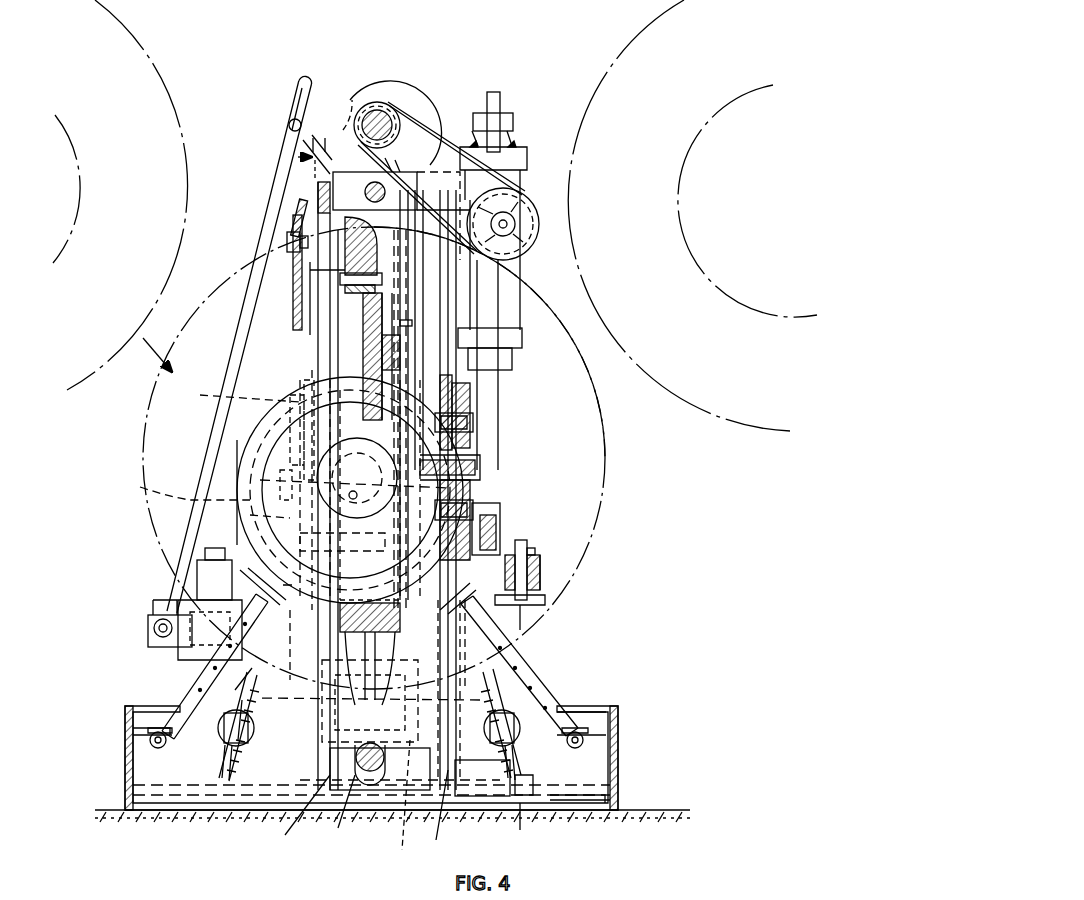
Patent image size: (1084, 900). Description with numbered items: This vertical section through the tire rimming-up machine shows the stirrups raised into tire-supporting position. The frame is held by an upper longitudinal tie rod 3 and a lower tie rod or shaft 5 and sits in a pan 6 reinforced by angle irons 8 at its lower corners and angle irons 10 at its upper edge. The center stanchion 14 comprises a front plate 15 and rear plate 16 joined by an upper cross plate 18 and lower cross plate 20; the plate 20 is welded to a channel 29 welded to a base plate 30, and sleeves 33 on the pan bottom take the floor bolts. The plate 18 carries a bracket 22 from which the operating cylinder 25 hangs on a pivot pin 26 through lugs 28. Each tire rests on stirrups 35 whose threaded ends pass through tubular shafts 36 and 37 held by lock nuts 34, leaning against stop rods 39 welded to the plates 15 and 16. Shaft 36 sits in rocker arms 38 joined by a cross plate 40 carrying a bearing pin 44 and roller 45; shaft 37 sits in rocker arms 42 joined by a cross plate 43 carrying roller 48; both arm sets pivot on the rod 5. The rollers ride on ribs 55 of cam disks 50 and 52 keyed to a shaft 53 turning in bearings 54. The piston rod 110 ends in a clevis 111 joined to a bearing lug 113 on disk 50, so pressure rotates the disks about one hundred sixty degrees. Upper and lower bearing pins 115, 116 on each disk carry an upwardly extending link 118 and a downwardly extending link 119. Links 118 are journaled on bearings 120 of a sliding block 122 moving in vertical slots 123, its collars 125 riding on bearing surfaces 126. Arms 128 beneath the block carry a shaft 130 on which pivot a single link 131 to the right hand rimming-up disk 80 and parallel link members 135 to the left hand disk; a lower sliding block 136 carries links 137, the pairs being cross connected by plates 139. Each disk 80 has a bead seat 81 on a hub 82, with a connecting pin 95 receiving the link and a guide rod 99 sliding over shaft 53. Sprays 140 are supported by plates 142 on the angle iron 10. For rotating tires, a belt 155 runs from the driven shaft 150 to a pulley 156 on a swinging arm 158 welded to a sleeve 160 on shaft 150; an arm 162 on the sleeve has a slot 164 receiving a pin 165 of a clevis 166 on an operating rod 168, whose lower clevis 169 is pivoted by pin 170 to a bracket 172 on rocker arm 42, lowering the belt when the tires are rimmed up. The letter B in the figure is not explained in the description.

The upper longitudinal tie rod 3 is at (365, 193).
The lower longitudinal tie rod 5 is at (337, 810).
The pan 6 is at (620, 753).
The angle irons 8 is at (608, 796).
The angle irons 10 is at (620, 722).
The center stanchion 14 is at (313, 180).
The front plate 15 is at (318, 200).
The rear plate 16 is at (437, 222).
The cross plate 18 is at (352, 174).
The cross plate 20 is at (294, 814).
The bracket 22 is at (500, 98).
The operating cylinder 25 is at (520, 182).
The pivot pin 26 is at (513, 122).
The lugs 28 is at (507, 130).
The third channel 29 is at (476, 800).
The base plate 30 is at (380, 795).
The sleeves 33 is at (525, 805).
The lock nuts 34 is at (240, 738).
The stirrups 35 is at (245, 680).
The front tubular shaft 36 is at (225, 732).
The rear tubular shaft 37 is at (490, 700).
The rocker arms 38 is at (228, 745).
The stop rods 39 is at (420, 300).
The angular cross plate 40 is at (545, 598).
The rocker arms 42 is at (234, 692).
The angular cross plate 43 is at (200, 635).
The bearing pin 44 is at (521, 548).
The cam follower roller 45 is at (540, 562).
The cam follower roller 48 is at (200, 572).
The cam disk 50 is at (470, 440).
The cam disk 52 is at (295, 420).
The shaft 53 is at (448, 470).
The bearings 54 is at (265, 477).
The rib 55 is at (367, 588).
The rimming-up disks 80 is at (245, 500).
The bead seat 81 is at (255, 455).
The hub 82 is at (335, 500).
The connecting pin 95 is at (355, 505).
The guide rod 99 is at (385, 543).
The piston rod 110 is at (452, 430).
The clevis 111 is at (500, 515).
The bearing lug 113 is at (496, 528).
The upper bearing pin 115 is at (473, 428).
The lower bearing pin 116 is at (458, 510).
The upwardly extending link 118 is at (296, 275).
The downwardly extending link 119 is at (290, 620).
The bearings 120 is at (287, 240).
The sliding block 122 is at (345, 220).
The vertical slots 123 is at (345, 300).
The collars 125 is at (302, 221).
The bearing surfaces 126 is at (612, 345).
The parallel arms 128 is at (350, 318).
The shaft 130 is at (340, 279).
The single link 131 is at (345, 375).
The parallel link members 135 is at (340, 380).
The sliding block 136 is at (400, 808).
The links 137 is at (395, 690).
The plates 139 is at (430, 346).
The sprays 140 is at (170, 732).
The plates 142 is at (140, 740).
The driven shaft 150 is at (376, 124).
The belts 155 is at (540, 220).
The pulley 156 is at (540, 226).
The swinging arm 158 is at (428, 150).
The sleeve 160 is at (365, 140).
The arms 162 is at (300, 85).
The slot 164 is at (298, 112).
The pin 165 is at (289, 124).
The clevis 166 is at (285, 178).
The operating rod 168 is at (190, 500).
The clevis 169 is at (152, 616).
The pin 170 is at (155, 630).
The bracket 172 is at (160, 646).
The circle B is at (612, 462).